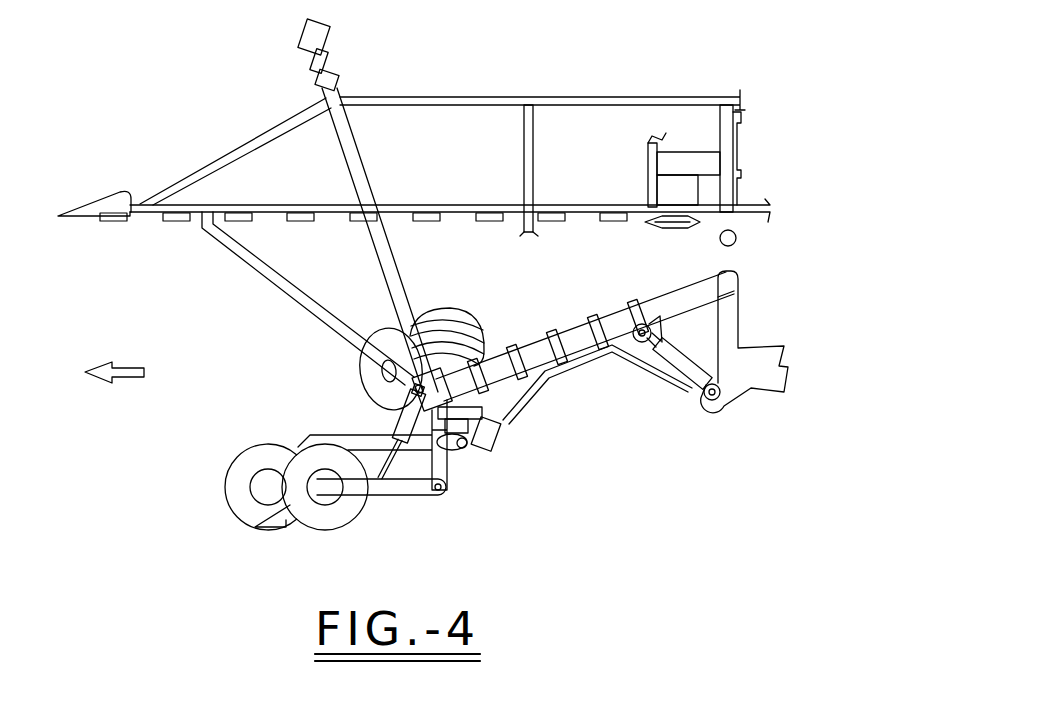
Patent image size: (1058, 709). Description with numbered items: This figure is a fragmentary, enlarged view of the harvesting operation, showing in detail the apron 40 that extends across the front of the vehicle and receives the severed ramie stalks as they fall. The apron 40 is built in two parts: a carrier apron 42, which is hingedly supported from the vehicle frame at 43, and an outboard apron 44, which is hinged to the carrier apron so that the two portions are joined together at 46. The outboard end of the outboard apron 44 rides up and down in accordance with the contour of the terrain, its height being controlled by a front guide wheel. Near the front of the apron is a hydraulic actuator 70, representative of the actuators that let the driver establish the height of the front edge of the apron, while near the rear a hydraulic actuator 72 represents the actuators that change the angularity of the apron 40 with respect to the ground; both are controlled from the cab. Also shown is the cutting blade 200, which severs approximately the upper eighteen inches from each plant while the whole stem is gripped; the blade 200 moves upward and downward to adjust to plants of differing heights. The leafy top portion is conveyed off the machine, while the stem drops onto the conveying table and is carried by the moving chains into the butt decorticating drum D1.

The outboard apron 44 is at (256, 133).
The cutting blade 200 is at (668, 226).
The hinge 46 is at (736, 245).
The carrier apron 42 is at (546, 338).
The hinge support 43 is at (755, 298).
The butt decorticating drum D1 is at (360, 376).
The hydraulic actuator 70 is at (402, 413).
The apron 40 is at (513, 377).
The hydraulic actuator 72 is at (690, 385).